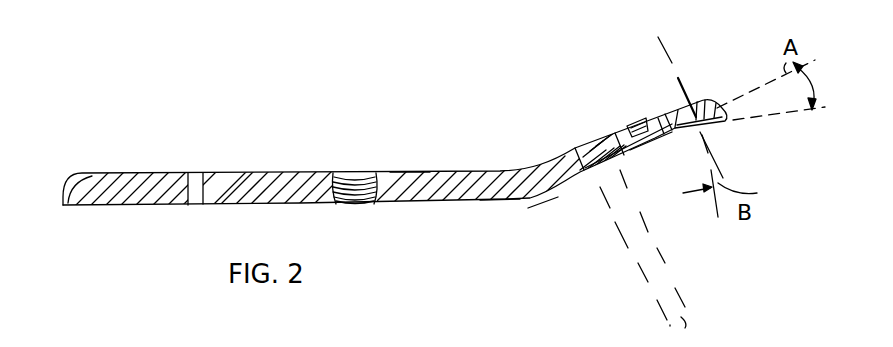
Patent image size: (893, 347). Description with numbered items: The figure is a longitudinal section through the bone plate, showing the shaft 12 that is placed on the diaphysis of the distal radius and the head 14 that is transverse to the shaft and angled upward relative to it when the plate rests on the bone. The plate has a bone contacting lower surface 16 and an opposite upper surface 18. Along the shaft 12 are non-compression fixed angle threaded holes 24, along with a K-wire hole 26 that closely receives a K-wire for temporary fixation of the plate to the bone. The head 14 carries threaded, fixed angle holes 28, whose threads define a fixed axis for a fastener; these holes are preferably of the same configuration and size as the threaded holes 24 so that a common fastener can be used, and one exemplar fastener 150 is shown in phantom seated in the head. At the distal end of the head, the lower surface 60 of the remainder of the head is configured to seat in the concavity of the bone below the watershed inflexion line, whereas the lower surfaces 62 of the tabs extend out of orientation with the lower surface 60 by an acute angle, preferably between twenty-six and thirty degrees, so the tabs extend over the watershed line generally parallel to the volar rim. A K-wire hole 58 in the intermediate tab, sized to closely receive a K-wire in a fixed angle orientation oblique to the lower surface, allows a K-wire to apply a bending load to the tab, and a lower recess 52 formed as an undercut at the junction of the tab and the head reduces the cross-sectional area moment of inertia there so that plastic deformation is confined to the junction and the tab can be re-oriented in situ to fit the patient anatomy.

The shaft 12 is at (303, 175).
The head 14 is at (615, 132).
The lower surface 16 is at (507, 199).
The upper surface 18 is at (409, 172).
The threaded holes 24 is at (353, 172).
The K-wire hole 26 is at (196, 184).
The threaded holes 28 is at (583, 143).
The lower recess 52 is at (673, 117).
The K-wire hole 58 is at (706, 96).
The lower surface 60 is at (643, 148).
The lower surfaces 62 is at (722, 172).
The fastener 150 is at (630, 226).